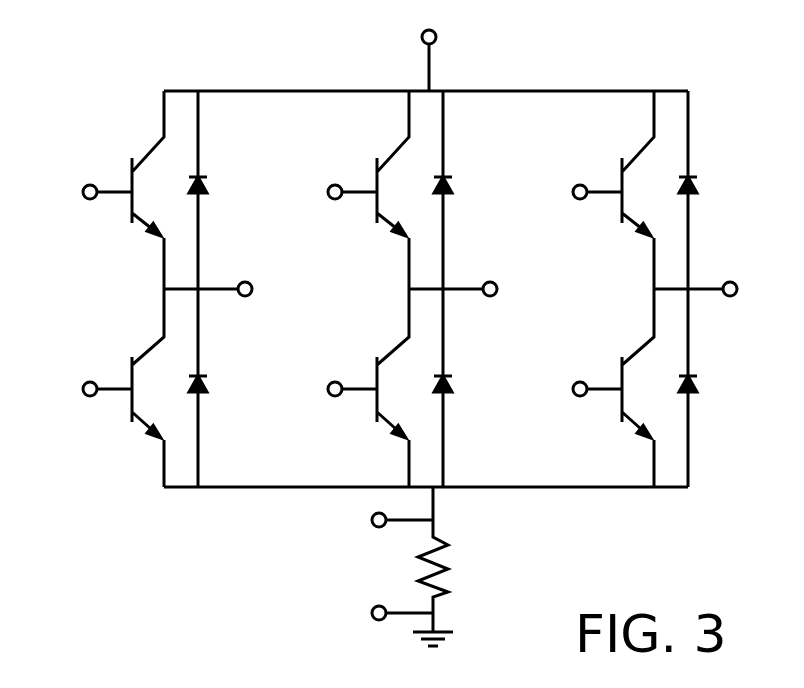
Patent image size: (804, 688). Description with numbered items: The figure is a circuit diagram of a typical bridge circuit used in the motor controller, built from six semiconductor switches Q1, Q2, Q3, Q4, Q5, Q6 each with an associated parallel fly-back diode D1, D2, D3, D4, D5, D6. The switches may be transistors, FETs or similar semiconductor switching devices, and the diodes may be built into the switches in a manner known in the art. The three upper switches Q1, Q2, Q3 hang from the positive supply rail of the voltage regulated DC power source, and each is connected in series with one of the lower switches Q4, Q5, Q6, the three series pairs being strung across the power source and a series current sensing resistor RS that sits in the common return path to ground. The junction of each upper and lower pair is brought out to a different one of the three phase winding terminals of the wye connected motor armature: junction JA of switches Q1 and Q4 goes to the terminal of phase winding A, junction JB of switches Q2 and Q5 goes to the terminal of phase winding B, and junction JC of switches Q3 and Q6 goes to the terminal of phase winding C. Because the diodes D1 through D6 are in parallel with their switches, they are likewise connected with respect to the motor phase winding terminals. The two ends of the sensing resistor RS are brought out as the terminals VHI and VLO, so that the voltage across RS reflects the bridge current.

The semiconductor switch Q1 is at (125, 172).
The semiconductor switch Q2 is at (368, 190).
The semiconductor switch Q3 is at (613, 190).
The semiconductor switch Q4 is at (125, 377).
The semiconductor switch Q5 is at (368, 388).
The semiconductor switch Q6 is at (613, 388).
The fly-back diode D1 is at (213, 183).
The fly-back diode D2 is at (481, 190).
The fly-back diode D3 is at (725, 190).
The fly-back diode D4 is at (213, 380).
The fly-back diode D5 is at (480, 388).
The fly-back diode D6 is at (725, 388).
The junction JA is at (233, 283).
The junction JB is at (478, 283).
The junction JC is at (721, 283).
The high-side sense voltage terminal VHI is at (369, 525).
The low-side sense voltage terminal VLO is at (369, 618).
The series current sensing resistor RS is at (456, 566).